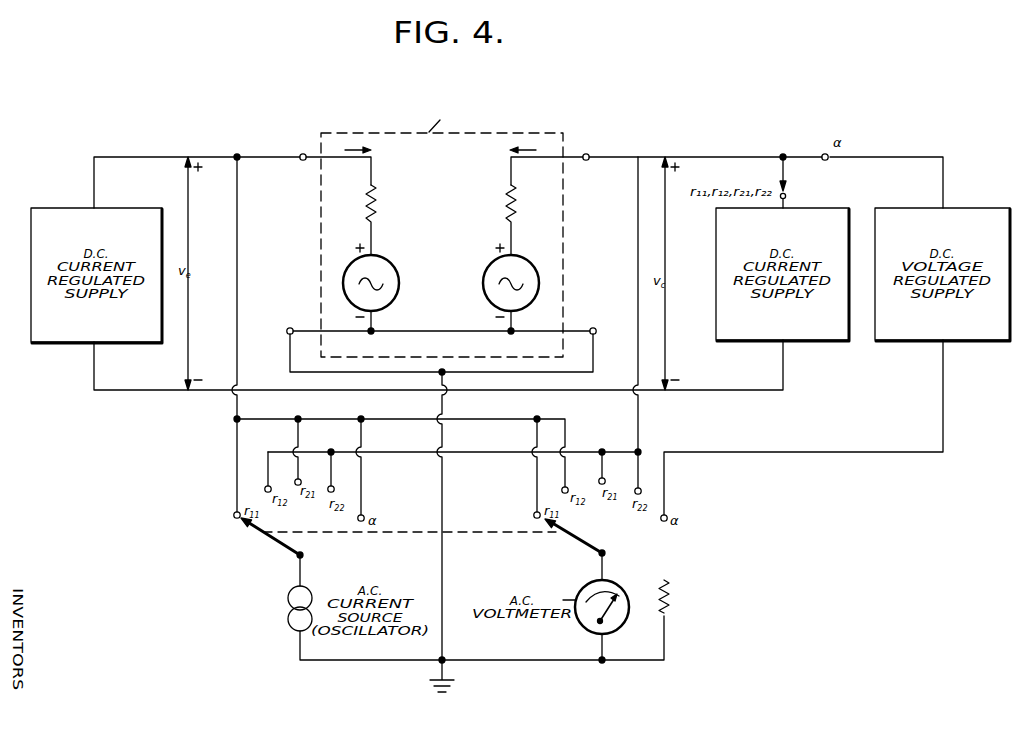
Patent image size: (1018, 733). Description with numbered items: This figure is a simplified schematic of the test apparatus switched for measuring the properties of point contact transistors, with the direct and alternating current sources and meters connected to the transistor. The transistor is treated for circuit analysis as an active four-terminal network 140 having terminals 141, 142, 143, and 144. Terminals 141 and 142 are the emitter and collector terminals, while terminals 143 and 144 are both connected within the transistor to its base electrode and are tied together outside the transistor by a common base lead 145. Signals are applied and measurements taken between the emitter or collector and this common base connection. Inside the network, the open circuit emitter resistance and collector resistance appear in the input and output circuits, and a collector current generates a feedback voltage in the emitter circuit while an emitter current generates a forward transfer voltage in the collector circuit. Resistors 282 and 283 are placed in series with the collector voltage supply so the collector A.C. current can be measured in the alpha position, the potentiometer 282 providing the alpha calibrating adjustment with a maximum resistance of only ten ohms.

The four-terminal network 140 is at (528, 133).
The emitter terminal 141 is at (301, 163).
The collector terminal 142 is at (593, 162).
The base terminal 143 is at (593, 327).
The base terminal 144 is at (288, 327).
The common base lead 145 is at (585, 376).
The potentiometer 282 is at (706, 596).
The resistor 283 is at (671, 599).